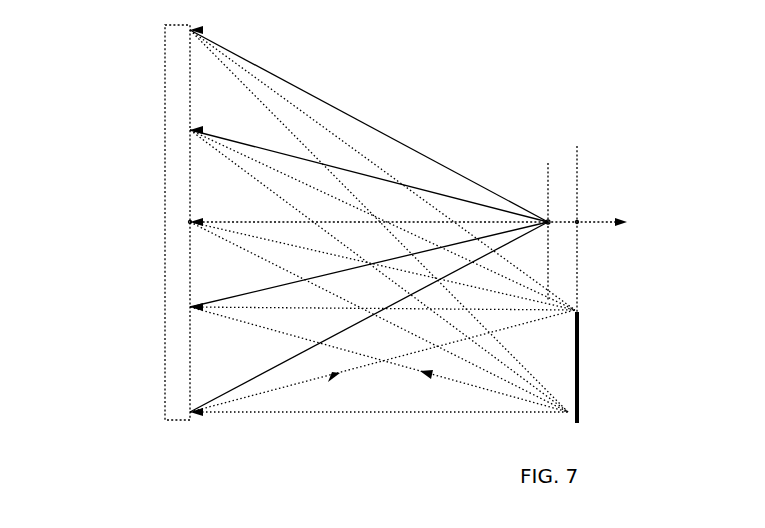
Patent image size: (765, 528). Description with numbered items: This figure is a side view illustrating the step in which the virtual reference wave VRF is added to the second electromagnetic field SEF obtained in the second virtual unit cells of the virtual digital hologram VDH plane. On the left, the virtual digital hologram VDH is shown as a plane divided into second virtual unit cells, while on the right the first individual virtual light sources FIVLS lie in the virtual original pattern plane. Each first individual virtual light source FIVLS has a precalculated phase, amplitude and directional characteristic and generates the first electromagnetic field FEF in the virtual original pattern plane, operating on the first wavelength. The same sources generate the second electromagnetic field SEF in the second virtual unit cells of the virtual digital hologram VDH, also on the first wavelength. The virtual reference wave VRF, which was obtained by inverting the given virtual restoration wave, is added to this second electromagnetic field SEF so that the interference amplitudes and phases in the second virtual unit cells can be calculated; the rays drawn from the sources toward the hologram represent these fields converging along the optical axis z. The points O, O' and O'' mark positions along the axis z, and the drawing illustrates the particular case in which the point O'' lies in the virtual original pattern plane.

The second electromagnetic field SEF is at (268, 90).
The virtual reference wave VRF is at (320, 96).
The virtual digital hologram VDH is at (190, 420).
The first electromagnetic field FEF is at (555, 416).
The first individual virtual light sources FIVLS is at (582, 350).
The origin O is at (198, 234).
The first focal point O' is at (587, 213).
The point O″ O'' is at (558, 234).
The optical axis z is at (408, 233).